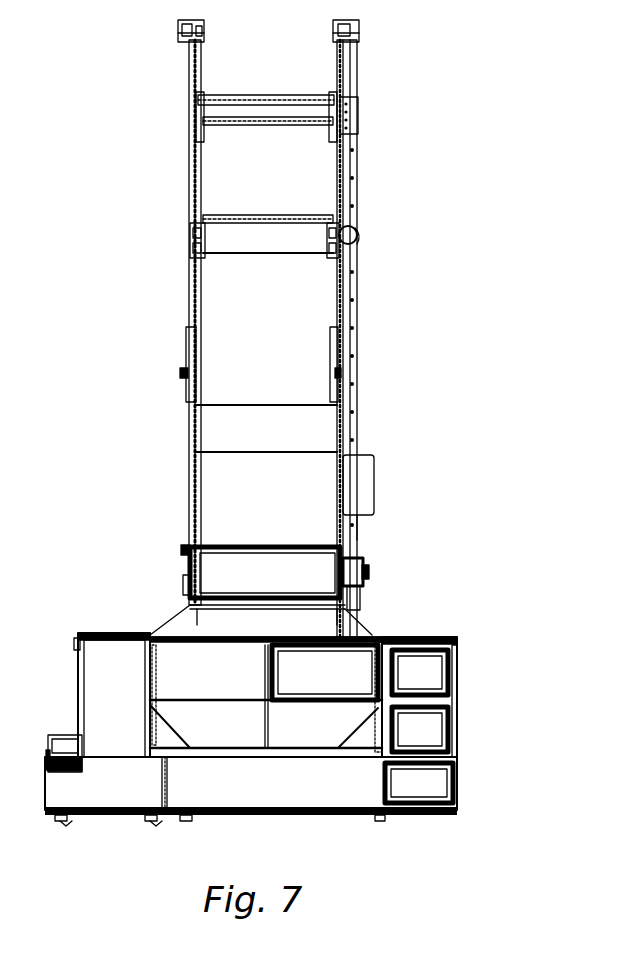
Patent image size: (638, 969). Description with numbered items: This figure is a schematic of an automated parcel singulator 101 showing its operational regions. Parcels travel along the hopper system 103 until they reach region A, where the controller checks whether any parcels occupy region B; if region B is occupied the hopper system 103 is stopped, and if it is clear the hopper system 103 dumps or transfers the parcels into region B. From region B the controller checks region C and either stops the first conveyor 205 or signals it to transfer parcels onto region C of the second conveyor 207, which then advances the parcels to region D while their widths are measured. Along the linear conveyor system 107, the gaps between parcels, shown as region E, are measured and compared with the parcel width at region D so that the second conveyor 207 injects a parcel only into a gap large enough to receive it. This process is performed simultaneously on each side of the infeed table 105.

The automated parcel singulator 101 is at (434, 392).
The hopper system 103 is at (178, 469).
The infeed table 105 is at (140, 619).
The linear conveyor system 107 is at (342, 815).
The first conveyor 205 is at (356, 640).
The second conveyor 207 is at (455, 705).